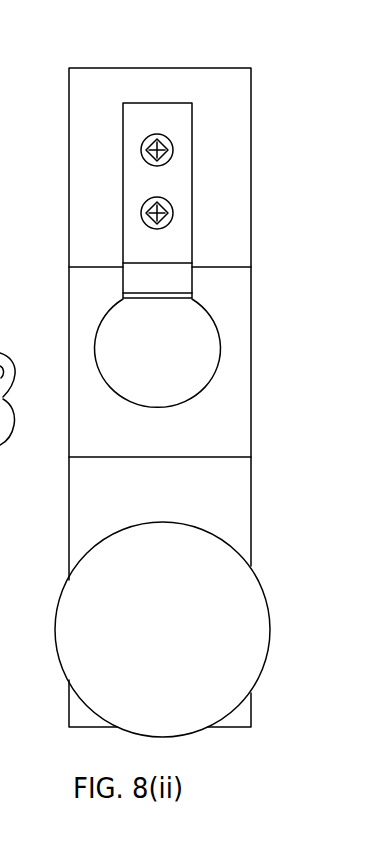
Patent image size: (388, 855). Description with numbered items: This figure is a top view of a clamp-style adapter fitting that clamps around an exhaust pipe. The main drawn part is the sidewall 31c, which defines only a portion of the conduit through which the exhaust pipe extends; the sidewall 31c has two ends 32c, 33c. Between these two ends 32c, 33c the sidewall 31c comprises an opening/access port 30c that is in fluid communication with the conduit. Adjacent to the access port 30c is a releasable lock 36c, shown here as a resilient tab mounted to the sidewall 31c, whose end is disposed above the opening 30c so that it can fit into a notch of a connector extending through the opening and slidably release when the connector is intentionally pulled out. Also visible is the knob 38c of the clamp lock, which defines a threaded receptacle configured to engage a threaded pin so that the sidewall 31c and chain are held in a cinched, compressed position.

The end of sidewall 32c is at (262, 70).
The releasable lock 36c is at (191, 284).
The opening/access port 30c is at (203, 330).
The sidewall 31c is at (240, 470).
The end of sidewall 33c is at (60, 716).
The knob 38c is at (261, 668).